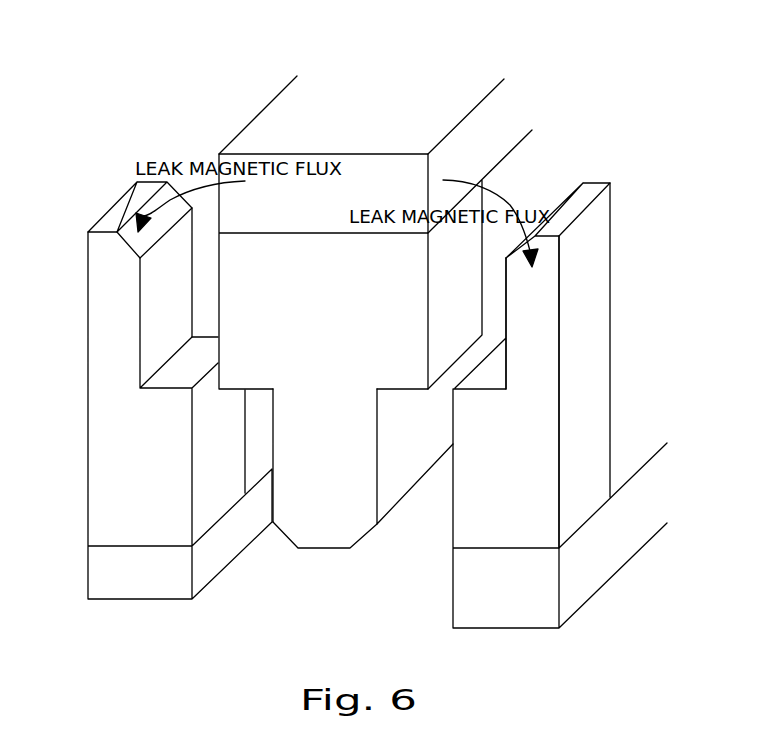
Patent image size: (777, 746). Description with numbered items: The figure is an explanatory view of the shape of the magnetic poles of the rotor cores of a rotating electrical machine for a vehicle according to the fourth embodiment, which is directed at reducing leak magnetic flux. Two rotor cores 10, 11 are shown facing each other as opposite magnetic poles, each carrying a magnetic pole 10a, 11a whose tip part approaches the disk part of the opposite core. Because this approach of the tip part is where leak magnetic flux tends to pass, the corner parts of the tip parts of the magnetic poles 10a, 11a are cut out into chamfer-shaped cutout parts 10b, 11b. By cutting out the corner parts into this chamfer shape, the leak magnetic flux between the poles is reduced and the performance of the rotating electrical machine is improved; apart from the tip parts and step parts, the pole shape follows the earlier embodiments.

The rotor core 10 is at (448, 97).
The magnetic pole 10a is at (362, 433).
The chamfer-shaped cutout part 10b is at (283, 533).
The rotor core 11 is at (612, 554).
The magnetic pole 11a is at (532, 288).
The chamfer-shaped cutout part 11b is at (170, 218).